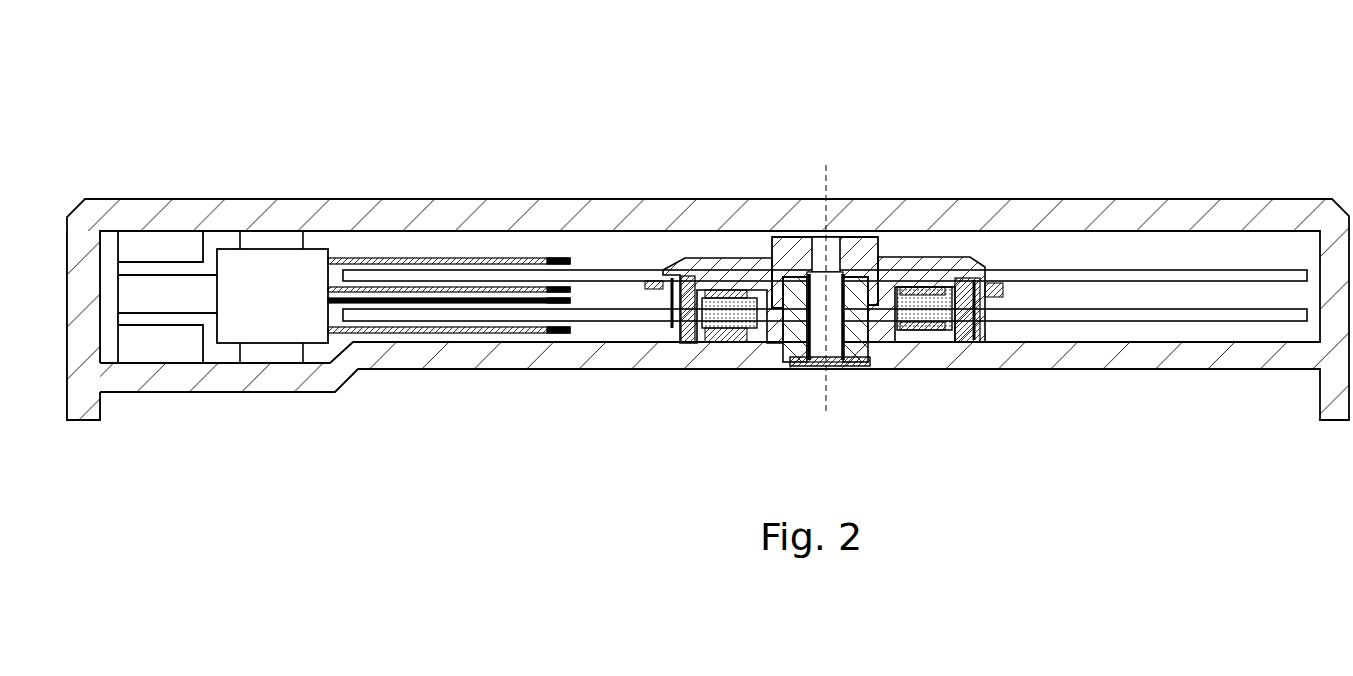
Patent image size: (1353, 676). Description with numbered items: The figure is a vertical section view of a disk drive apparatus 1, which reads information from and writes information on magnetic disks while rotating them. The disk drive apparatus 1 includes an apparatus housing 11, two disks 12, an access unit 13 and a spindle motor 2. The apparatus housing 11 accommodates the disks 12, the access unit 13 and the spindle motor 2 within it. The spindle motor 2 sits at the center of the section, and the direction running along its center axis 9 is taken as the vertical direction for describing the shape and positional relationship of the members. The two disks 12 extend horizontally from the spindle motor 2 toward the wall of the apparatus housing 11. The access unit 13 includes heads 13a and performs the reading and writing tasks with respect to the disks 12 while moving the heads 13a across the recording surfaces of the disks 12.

The disk drive apparatus 1 is at (222, 128).
The spindle motor 2 is at (953, 250).
The center axis 9 is at (824, 176).
The apparatus housing 11 is at (1283, 199).
The disk 12 is at (1150, 309).
The access unit 13 is at (452, 250).
The heads 13a is at (553, 288).